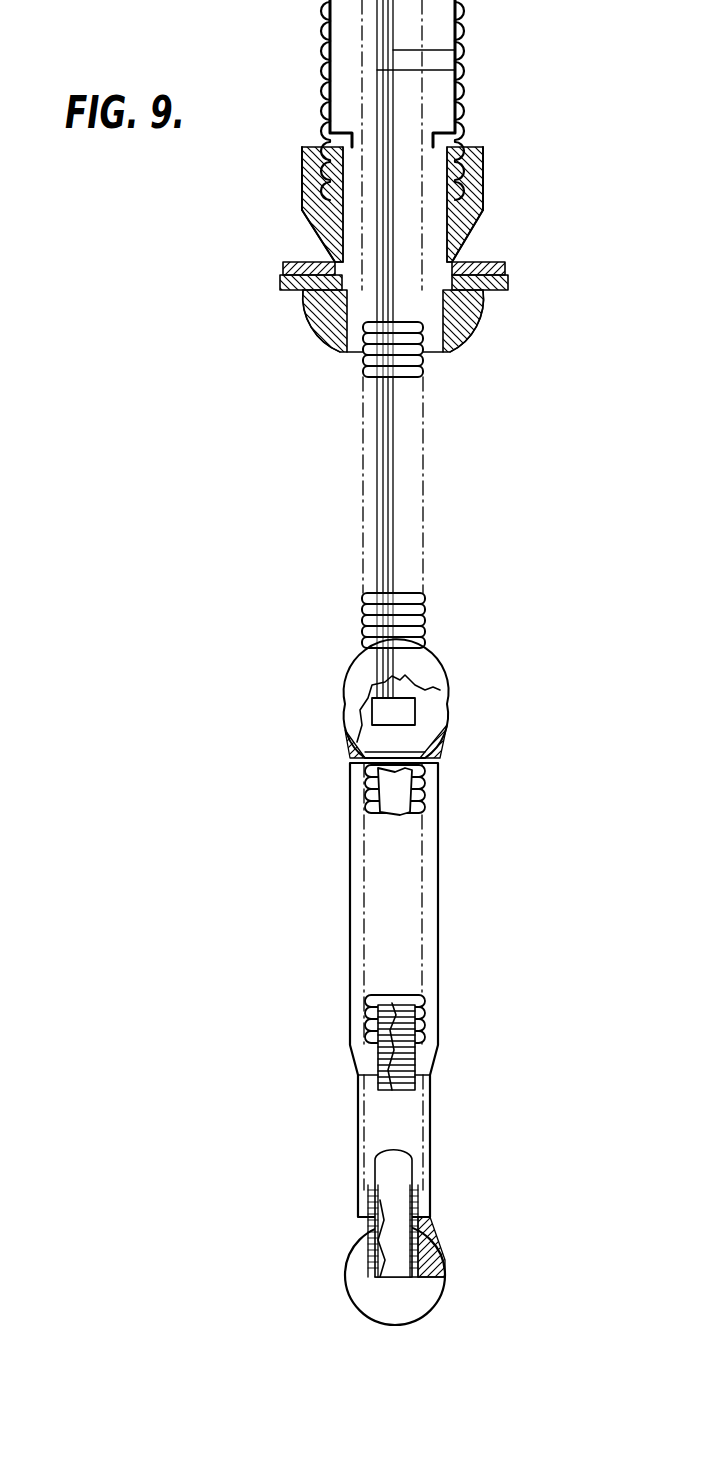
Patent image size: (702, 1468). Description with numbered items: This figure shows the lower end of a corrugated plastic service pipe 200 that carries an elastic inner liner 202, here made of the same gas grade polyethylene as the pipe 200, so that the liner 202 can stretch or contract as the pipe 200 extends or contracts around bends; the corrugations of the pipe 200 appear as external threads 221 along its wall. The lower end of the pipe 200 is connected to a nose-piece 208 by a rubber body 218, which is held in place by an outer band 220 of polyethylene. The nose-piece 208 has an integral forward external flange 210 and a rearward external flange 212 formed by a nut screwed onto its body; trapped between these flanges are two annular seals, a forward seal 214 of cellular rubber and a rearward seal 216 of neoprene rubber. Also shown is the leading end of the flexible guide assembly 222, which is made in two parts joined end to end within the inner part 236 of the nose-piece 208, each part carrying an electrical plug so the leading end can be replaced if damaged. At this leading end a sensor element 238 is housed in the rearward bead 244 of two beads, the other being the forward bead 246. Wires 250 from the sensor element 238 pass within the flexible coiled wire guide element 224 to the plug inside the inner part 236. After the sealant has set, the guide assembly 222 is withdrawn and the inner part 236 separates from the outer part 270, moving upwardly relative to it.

The corrugated plastic service pipe 200 is at (462, 70).
The inner liner 202 is at (340, 32).
The nose-piece 208 is at (475, 345).
The forward external flange 210 is at (472, 314).
The rearward external flange 212 is at (490, 220).
The forward seal 214 is at (500, 292).
The rearward seal 216 is at (505, 262).
The rubber body 218 is at (468, 148).
The outer band 220 is at (485, 168).
The threads 221 is at (332, 44).
The flexible guide assembly 222 is at (436, 616).
The flexible coiled wire guide element 224 is at (367, 378).
The inner part 236 is at (348, 221).
The sensor element 238 is at (407, 712).
The rearward bead 244 is at (362, 680).
The forward bead 246 is at (358, 1252).
The wires 250 is at (455, 50).
The outer part 270 is at (345, 250).